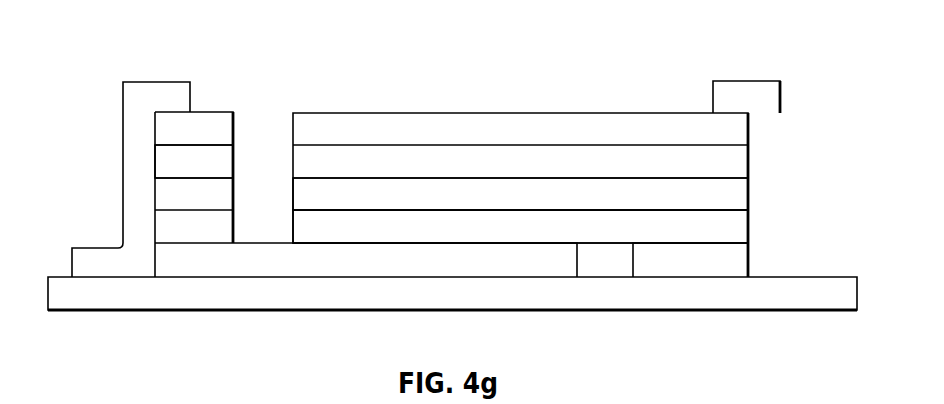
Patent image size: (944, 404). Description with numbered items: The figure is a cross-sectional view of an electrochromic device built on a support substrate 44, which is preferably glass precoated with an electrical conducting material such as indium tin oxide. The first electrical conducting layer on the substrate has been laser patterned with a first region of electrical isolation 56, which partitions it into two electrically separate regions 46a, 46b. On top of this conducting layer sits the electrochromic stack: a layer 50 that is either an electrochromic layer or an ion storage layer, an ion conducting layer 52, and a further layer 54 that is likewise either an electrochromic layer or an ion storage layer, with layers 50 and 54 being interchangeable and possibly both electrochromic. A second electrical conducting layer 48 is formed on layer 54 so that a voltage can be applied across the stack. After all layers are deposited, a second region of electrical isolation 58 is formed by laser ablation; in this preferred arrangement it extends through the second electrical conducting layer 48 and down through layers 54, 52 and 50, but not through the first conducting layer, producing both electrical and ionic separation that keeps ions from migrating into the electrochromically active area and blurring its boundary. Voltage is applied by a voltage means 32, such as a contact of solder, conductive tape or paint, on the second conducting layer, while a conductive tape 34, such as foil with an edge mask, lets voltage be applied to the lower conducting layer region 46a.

The voltage means 32 is at (768, 95).
The conductive tape 34 is at (132, 213).
The support substrate 44 is at (698, 293).
The electrically separate region of first electrical conducting layer 46a is at (233, 262).
The electrically separate region of first electrical conducting layer 46b is at (730, 267).
The second electrical conducting layer 48 is at (168, 133).
The electrochromic or ion storage layer 50 is at (738, 217).
The ion conducting layer 52 is at (740, 188).
The electrochromic or ion storage layer 54 is at (167, 163).
The first region of electrical isolation 56 is at (610, 257).
The second region of electrical isolation 58 is at (260, 163).